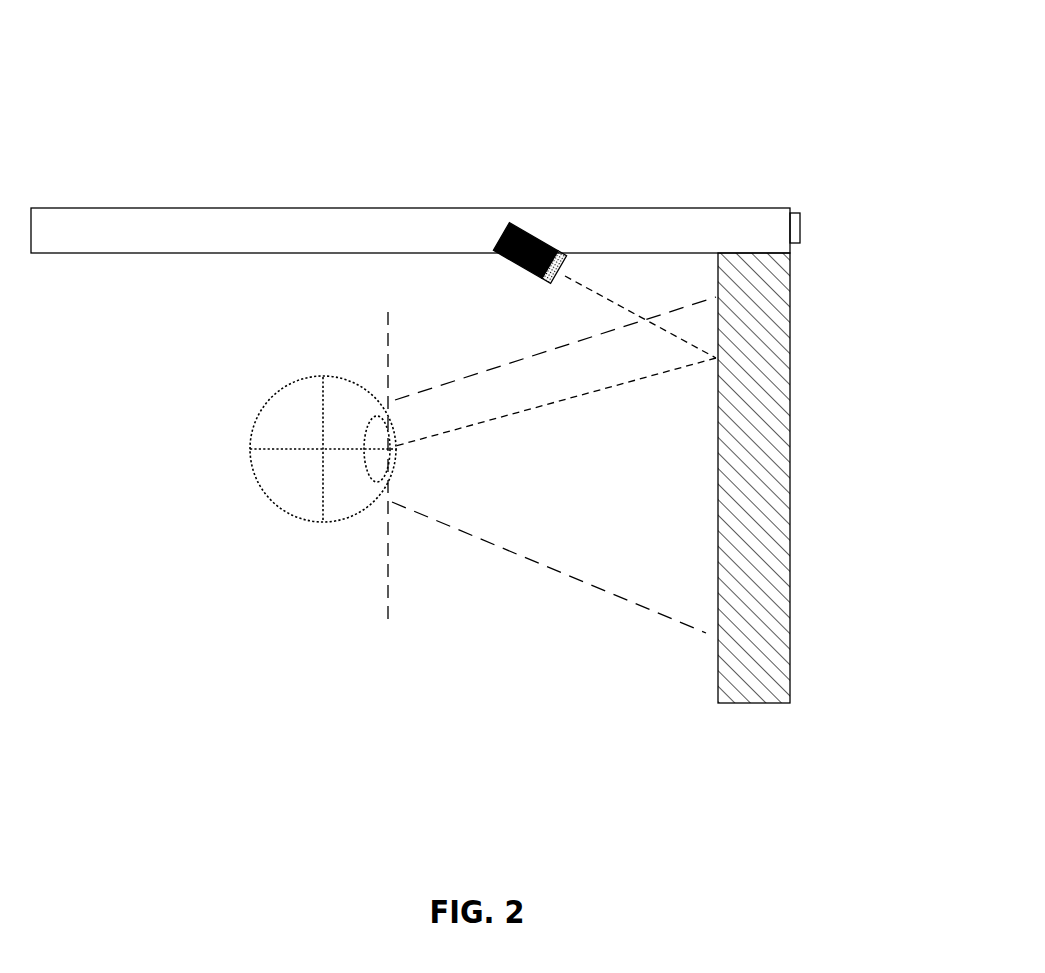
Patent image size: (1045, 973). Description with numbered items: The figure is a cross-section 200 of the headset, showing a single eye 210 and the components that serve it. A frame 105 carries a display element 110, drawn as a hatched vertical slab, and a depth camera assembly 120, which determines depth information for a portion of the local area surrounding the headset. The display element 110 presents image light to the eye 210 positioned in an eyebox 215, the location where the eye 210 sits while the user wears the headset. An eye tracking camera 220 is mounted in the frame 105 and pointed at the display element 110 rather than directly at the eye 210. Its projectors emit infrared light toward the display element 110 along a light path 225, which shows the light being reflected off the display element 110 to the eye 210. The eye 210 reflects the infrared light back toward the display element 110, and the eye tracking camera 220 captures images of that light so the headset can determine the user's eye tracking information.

The cross-section 200 is at (142, 160).
The frame 105 is at (630, 208).
The display element 110 is at (743, 347).
The depth camera assembly 120 is at (802, 223).
The eye 210 is at (288, 388).
The eyebox 215 is at (385, 513).
The eye tracking camera 220 is at (512, 224).
The light path 225 is at (617, 302).